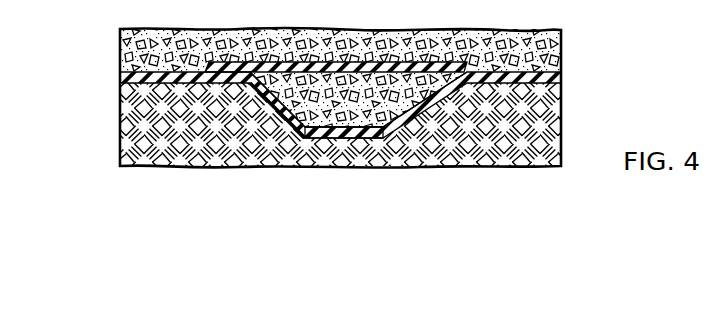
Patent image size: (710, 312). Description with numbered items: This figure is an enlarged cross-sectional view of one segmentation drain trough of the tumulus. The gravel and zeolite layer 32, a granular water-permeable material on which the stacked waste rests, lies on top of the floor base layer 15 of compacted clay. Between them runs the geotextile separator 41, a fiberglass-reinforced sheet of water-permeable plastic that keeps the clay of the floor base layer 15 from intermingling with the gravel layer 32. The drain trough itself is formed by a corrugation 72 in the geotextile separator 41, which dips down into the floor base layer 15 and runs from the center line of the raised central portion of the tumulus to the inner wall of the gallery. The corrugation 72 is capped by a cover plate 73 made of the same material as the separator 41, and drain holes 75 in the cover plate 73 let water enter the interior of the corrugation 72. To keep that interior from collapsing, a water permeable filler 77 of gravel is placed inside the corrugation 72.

The floor base layer 15 is at (558, 117).
The gravel and zeolite layer 32 is at (121, 46).
The geotextile separator 41 is at (548, 82).
The corrugation 72 is at (338, 132).
The cover plate 73 is at (227, 72).
The drain holes 75 is at (360, 72).
The water permeable filler 77 is at (363, 104).